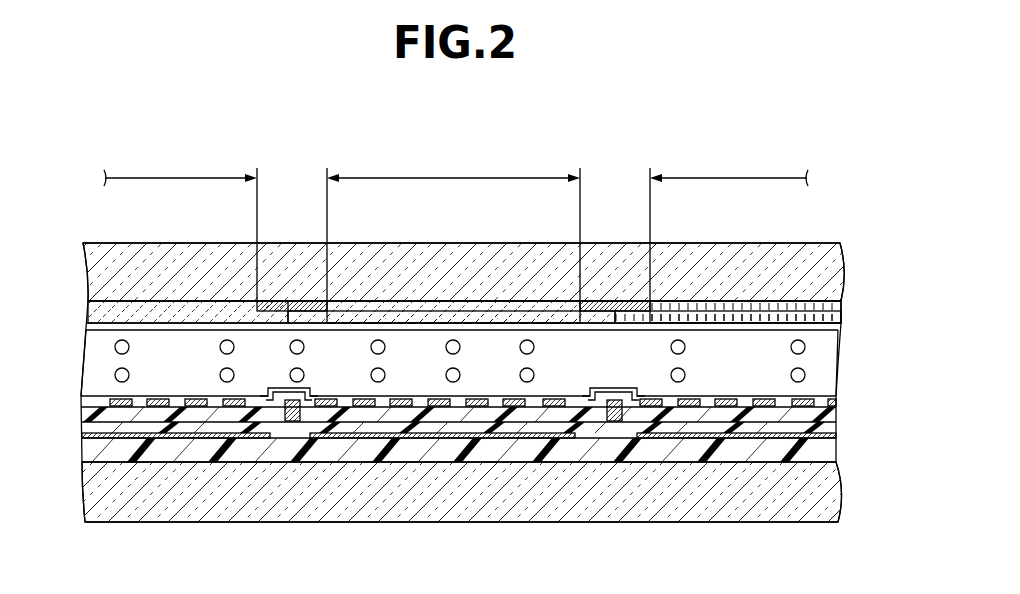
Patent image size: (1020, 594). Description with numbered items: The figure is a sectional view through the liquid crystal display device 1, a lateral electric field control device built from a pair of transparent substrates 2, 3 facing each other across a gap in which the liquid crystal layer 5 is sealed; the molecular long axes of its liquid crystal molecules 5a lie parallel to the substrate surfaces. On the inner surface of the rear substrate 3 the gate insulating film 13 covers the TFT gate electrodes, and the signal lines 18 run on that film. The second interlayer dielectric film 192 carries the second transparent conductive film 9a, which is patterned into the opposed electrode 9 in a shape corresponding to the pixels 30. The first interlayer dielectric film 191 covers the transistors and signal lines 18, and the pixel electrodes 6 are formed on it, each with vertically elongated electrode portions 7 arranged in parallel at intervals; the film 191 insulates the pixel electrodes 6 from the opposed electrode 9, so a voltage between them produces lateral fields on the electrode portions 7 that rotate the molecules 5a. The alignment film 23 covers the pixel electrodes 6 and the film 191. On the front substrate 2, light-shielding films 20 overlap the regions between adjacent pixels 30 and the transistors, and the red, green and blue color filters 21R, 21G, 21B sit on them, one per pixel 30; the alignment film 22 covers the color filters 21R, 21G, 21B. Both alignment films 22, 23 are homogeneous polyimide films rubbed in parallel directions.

The liquid crystal display device 1 is at (824, 230).
The front substrate 2 is at (830, 276).
The rear substrate 3 is at (830, 490).
The liquid crystal layer 5 is at (828, 346).
The liquid crystal molecules 5a is at (220, 375).
The pixel electrode 6 is at (261, 386).
The elongated electrode portions 7 is at (400, 397).
The opposed electrode 9 is at (240, 456).
The second transparent conductive film 9a is at (183, 445).
The gate insulating film 13 is at (520, 446).
The signal line 18 is at (290, 422).
The light-shielding film 20 is at (283, 308).
The red color filter 21R is at (125, 312).
The green color filter 21G is at (373, 316).
The blue color filter 21B is at (744, 316).
The alignment film 22 is at (163, 332).
The alignment film 23 is at (786, 395).
The pixel 30 is at (179, 178).
The first interlayer dielectric film 191 is at (390, 437).
The second interlayer dielectric film 192 is at (348, 438).